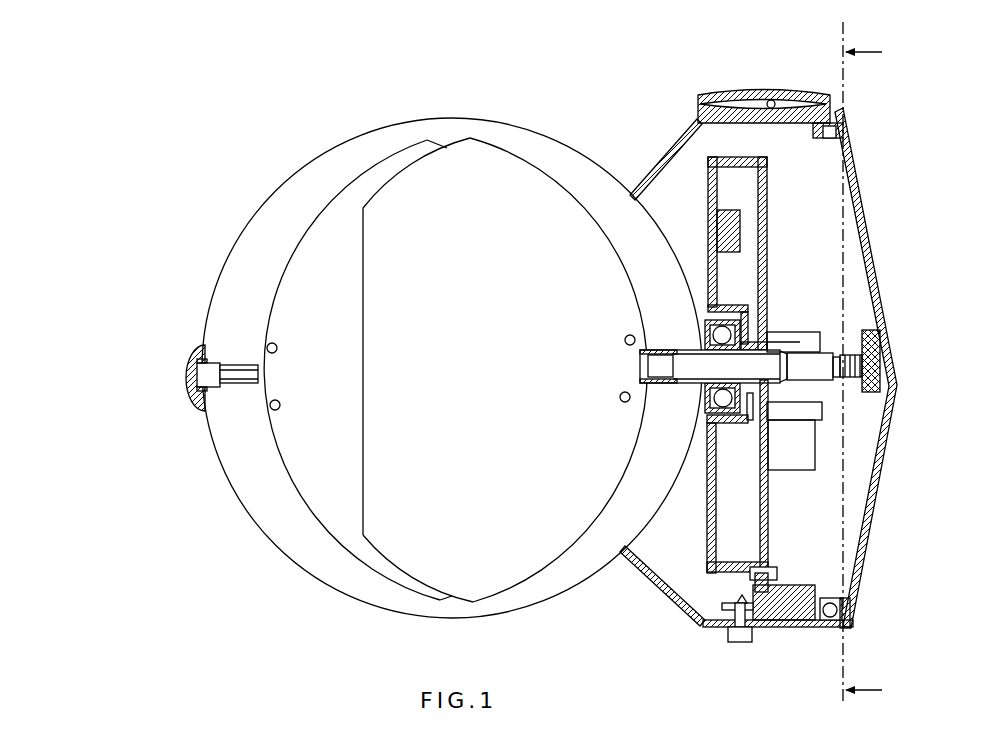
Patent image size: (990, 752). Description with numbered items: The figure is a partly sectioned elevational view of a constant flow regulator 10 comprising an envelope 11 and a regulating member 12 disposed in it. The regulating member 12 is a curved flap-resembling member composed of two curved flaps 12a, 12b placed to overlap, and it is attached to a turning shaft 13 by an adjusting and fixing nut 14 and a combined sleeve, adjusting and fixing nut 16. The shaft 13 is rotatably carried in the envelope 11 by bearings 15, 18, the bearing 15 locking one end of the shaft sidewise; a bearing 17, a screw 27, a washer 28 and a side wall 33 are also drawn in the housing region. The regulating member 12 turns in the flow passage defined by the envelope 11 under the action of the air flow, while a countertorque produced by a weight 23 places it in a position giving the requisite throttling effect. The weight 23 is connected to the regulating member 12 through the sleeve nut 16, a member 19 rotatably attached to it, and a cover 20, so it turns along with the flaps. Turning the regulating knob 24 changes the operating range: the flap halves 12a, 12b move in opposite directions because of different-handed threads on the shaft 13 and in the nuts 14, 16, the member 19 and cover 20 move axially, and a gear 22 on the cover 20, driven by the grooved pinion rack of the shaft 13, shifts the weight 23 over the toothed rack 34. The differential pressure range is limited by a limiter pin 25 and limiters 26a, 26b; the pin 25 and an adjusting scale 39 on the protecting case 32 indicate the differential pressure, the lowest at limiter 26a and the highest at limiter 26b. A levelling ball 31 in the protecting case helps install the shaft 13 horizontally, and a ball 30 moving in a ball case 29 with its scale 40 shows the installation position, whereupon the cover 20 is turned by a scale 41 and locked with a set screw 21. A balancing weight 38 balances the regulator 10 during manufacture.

The constant flow regulator 10 is at (887, 207).
The envelope 11 is at (252, 215).
The regulating member 12 is at (521, 186).
The curved flap 12a is at (318, 518).
The curved flap 12b is at (543, 547).
The turning shaft 13 is at (235, 375).
The adjusting and fixing nut 14 is at (262, 349).
The bearing 15 is at (205, 400).
The combined sleeve, adjusting and fixing nut 16 is at (683, 352).
The bearing 17 is at (703, 333).
The bearing 18 is at (742, 340).
The member 19 is at (708, 192).
The cover 20 is at (768, 185).
The set screw 21 is at (780, 572).
The gear 22 is at (830, 398).
The weight 23 is at (812, 450).
The regulating knob 24 is at (880, 346).
The limiter pin 25 is at (752, 580).
The limiter 26a is at (803, 605).
The limiter 26b is at (794, 644).
The screw 27 is at (738, 636).
The washer 28 is at (735, 600).
The ball case 29 is at (843, 605).
The ball 30 is at (853, 613).
The levelling ball 31 is at (772, 100).
The protecting case 32 is at (668, 586).
The side wall 33 is at (887, 478).
The toothed rack 34 is at (763, 400).
The balancing weight 38 is at (737, 226).
The adjusting scale 39 is at (772, 626).
The scale 40 is at (853, 624).
The scale 41 is at (762, 568).